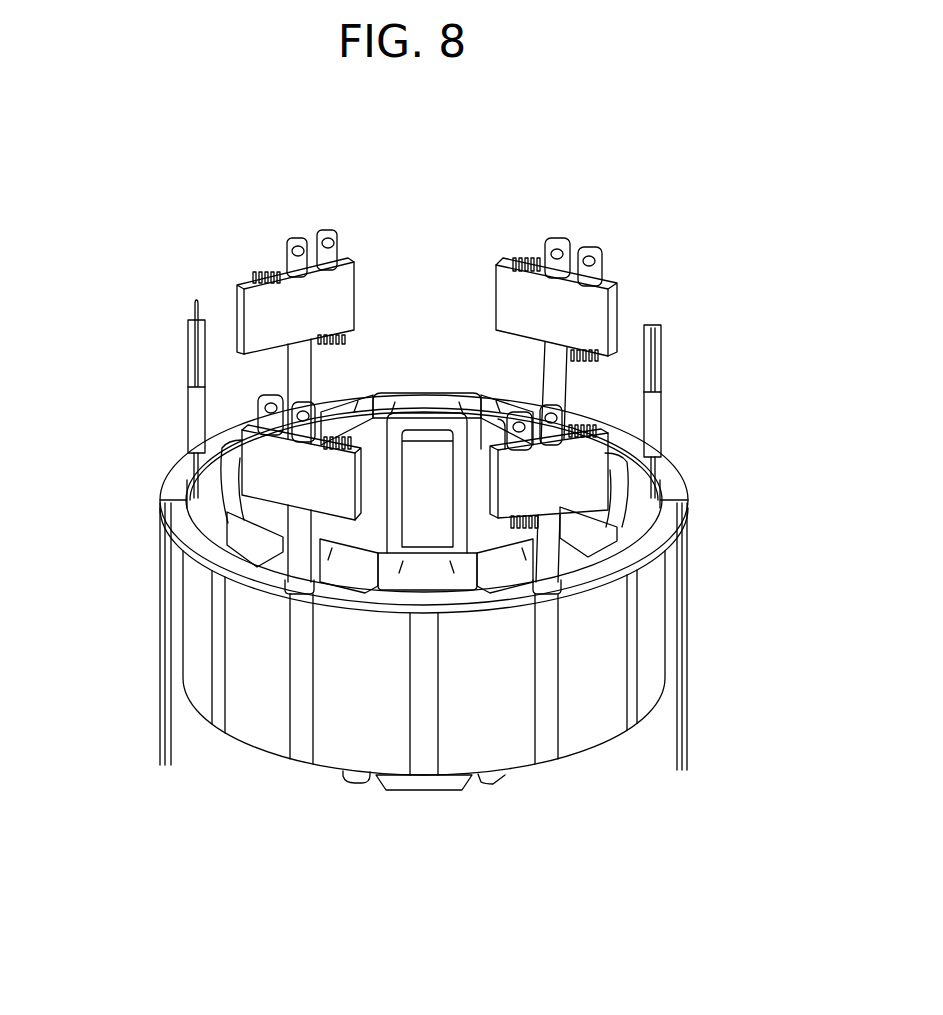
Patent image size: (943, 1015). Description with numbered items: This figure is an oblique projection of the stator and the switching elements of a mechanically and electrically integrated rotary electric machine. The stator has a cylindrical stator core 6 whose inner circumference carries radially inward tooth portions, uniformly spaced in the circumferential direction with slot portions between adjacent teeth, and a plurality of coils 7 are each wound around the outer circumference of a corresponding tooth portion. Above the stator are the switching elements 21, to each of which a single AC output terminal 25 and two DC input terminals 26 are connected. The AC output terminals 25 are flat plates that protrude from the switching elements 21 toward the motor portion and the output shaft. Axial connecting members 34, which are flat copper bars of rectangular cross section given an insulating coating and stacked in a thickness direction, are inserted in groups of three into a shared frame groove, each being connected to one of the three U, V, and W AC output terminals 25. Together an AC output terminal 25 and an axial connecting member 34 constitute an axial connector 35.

The stator core 6 is at (493, 757).
The coil 7 is at (412, 402).
The switching element 21 is at (259, 306).
The AC output terminal 25 is at (553, 372).
The DC input terminal 26 is at (603, 250).
The axial connecting member 34 is at (158, 749).
The axial connector 35 is at (697, 596).